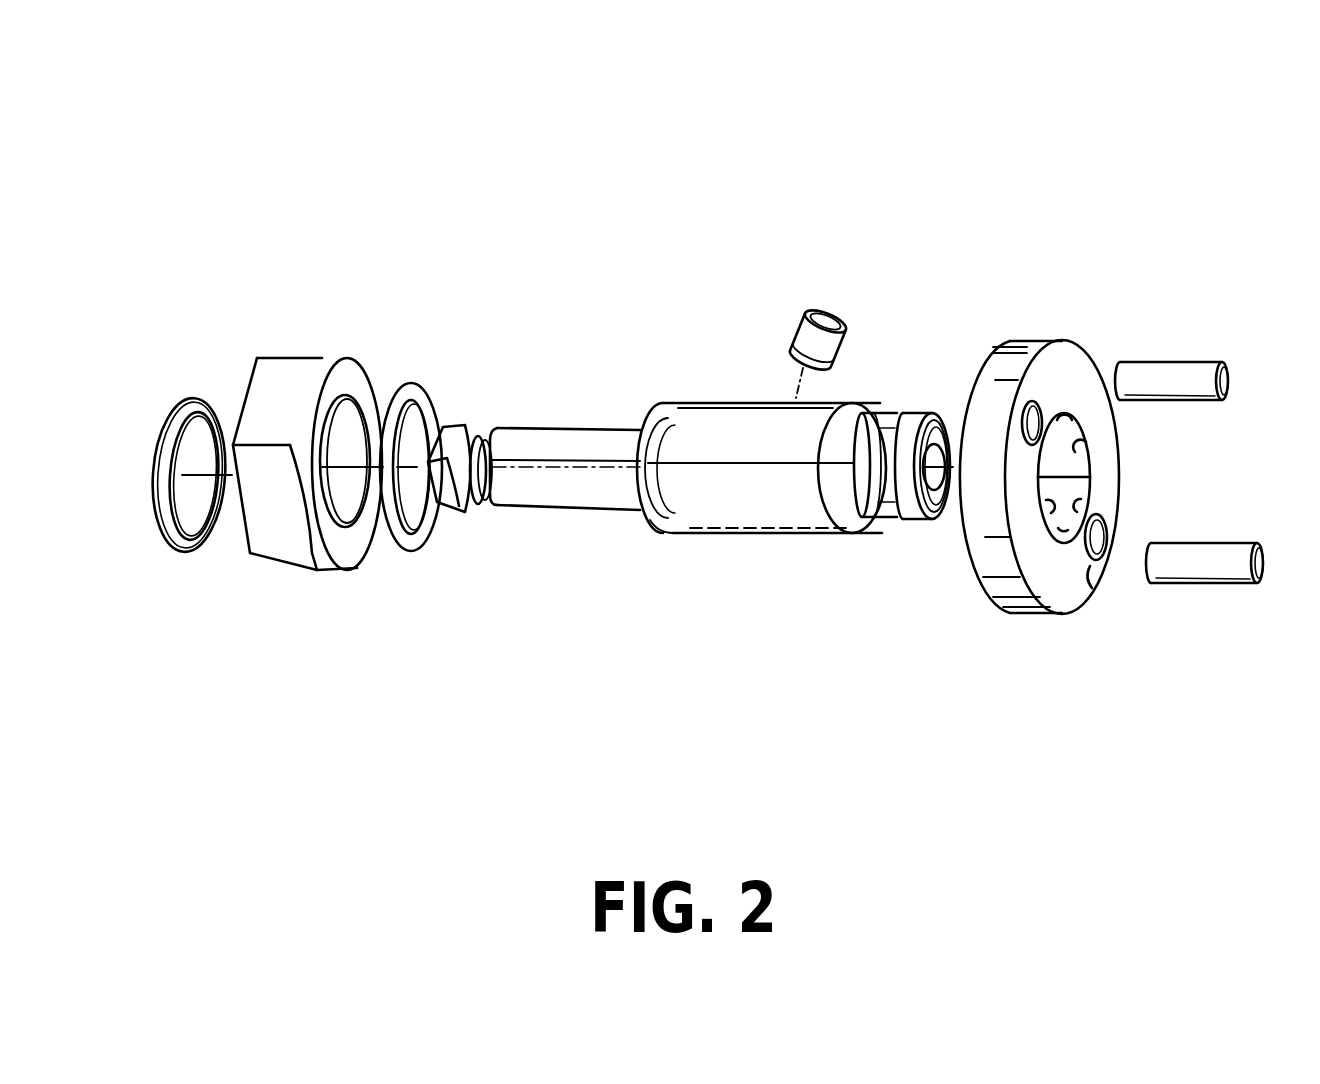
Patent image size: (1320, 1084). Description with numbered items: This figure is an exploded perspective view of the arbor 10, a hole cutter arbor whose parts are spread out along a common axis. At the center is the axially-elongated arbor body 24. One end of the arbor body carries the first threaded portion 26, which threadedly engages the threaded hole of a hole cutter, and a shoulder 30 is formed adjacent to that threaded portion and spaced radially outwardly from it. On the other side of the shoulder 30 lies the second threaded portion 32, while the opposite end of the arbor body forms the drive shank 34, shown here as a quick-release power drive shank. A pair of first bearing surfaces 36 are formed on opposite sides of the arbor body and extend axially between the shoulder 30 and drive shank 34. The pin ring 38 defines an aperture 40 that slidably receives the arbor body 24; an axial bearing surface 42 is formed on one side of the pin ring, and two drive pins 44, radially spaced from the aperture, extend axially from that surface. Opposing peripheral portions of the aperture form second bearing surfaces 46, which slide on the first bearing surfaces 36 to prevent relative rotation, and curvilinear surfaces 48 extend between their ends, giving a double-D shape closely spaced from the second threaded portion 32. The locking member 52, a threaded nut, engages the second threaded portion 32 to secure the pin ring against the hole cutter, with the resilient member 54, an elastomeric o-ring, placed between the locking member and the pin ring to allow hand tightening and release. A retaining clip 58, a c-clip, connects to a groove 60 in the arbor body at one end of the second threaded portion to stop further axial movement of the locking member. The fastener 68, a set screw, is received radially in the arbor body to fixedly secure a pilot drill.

The arbor 10 is at (614, 186).
The arbor body 24 is at (737, 376).
The first threaded portion 26 is at (902, 523).
The shoulder 30 is at (880, 403).
The second threaded portion 32 is at (743, 504).
The drive shank 34 is at (540, 427).
The first bearing surfaces 36 is at (683, 427).
The pin ring 38 is at (985, 318).
The aperture 40 is at (1072, 545).
The axial bearing surface 42 is at (1093, 573).
The drive pins 44 is at (1180, 373).
The second bearing surfaces 46 is at (1075, 425).
The curvilinear surfaces 48 is at (1088, 463).
The locking member 52 is at (280, 358).
The resilient member 54 is at (407, 380).
The retaining clip 58 is at (165, 535).
The groove 60 is at (657, 530).
The fastener 68 is at (823, 325).